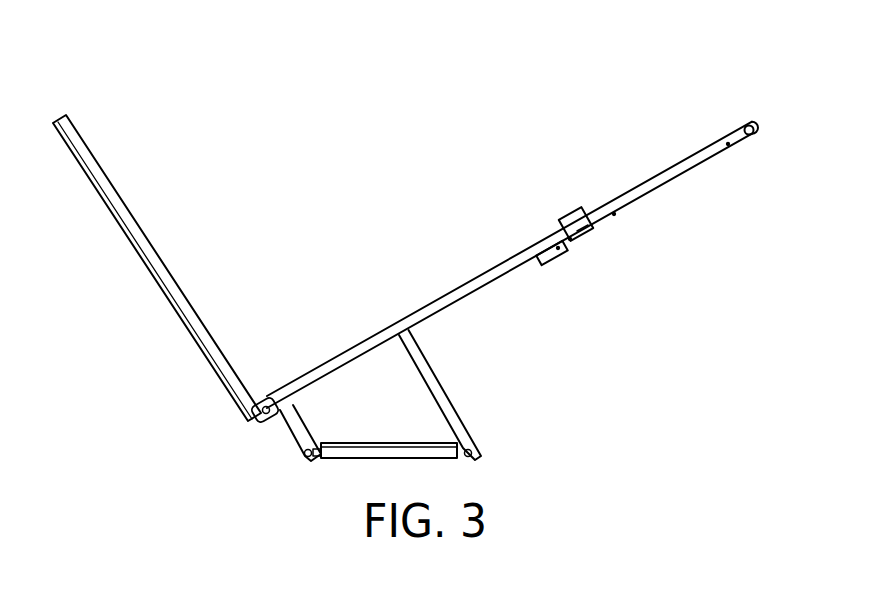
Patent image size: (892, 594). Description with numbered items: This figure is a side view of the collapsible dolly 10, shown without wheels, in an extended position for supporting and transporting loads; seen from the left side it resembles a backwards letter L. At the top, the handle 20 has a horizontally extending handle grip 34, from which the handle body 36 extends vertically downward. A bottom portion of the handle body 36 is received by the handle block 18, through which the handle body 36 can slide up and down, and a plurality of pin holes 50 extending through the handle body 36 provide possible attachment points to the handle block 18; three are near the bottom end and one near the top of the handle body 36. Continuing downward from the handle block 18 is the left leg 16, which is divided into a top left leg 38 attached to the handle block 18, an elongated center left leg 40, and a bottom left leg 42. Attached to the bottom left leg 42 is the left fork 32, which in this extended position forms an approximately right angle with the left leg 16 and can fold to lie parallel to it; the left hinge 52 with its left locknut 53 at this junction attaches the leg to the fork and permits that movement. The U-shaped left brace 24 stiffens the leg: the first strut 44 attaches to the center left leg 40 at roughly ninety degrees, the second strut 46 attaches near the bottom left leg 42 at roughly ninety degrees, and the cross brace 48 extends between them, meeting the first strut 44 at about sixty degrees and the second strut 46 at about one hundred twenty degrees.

The collapsible dolly 10 is at (605, 400).
The left leg 16 is at (512, 265).
The handle block 18 is at (572, 211).
The handle 20 is at (700, 153).
The left brace 24 is at (386, 400).
The left fork 32 is at (160, 252).
The handle grip 34 is at (755, 127).
The handle body 36 is at (667, 182).
The top left leg 38 is at (532, 245).
The center left leg 40 is at (395, 322).
The bottom left leg 42 is at (330, 360).
The first strut 44 is at (434, 390).
The second strut 46 is at (283, 417).
The cross brace 48 is at (355, 450).
The pin holes 50 is at (730, 146).
The left hinge 52 is at (257, 411).
The left locknut 53 is at (270, 400).